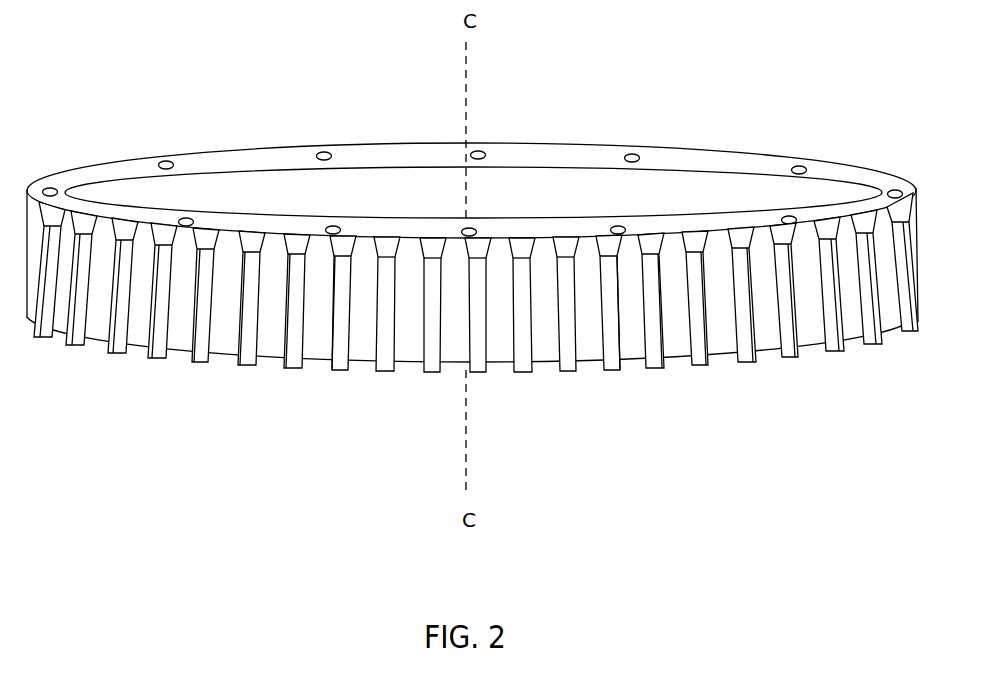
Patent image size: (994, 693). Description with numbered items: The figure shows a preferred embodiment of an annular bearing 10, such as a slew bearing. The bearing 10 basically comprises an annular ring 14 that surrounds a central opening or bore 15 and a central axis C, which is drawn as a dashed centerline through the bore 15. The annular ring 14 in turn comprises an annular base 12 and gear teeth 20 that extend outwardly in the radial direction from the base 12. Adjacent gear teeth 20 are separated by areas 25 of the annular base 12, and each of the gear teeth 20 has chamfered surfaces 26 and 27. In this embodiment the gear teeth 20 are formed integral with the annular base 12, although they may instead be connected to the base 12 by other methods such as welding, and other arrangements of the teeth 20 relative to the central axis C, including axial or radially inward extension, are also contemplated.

The annular bearing 10 is at (763, 152).
The annular base 12 is at (550, 157).
The annular ring 14 is at (497, 340).
The central opening or bore 15 is at (401, 173).
The gear teeth 20 is at (387, 355).
The areas of the annular base 25 is at (318, 353).
The chamfered surface 26 is at (600, 333).
The chamfered surface 27 is at (618, 340).